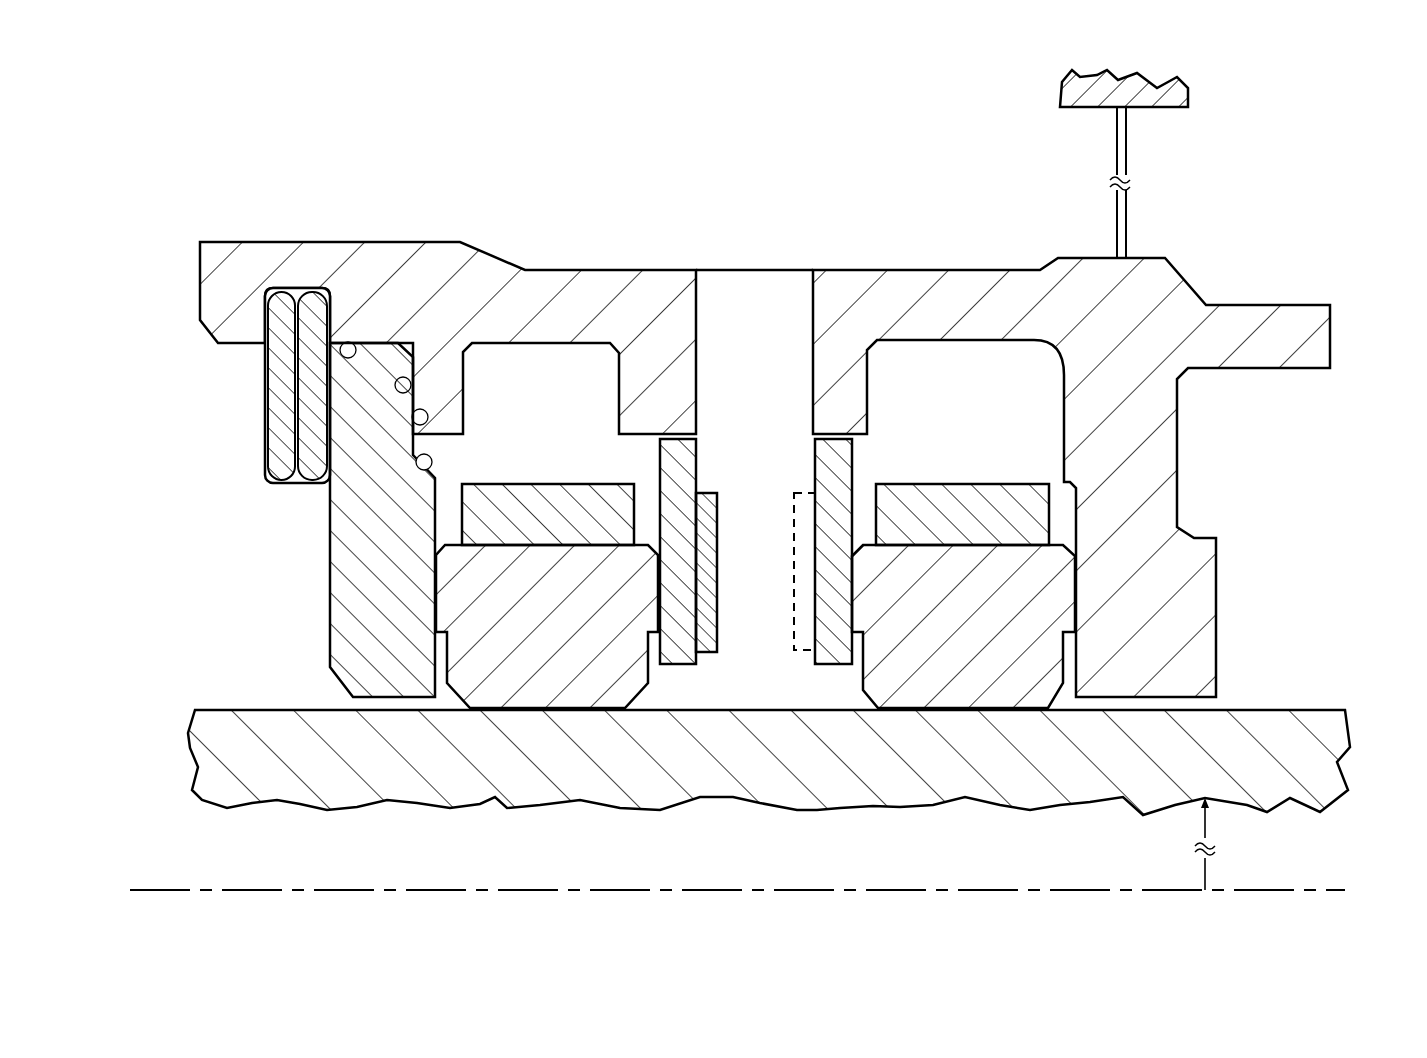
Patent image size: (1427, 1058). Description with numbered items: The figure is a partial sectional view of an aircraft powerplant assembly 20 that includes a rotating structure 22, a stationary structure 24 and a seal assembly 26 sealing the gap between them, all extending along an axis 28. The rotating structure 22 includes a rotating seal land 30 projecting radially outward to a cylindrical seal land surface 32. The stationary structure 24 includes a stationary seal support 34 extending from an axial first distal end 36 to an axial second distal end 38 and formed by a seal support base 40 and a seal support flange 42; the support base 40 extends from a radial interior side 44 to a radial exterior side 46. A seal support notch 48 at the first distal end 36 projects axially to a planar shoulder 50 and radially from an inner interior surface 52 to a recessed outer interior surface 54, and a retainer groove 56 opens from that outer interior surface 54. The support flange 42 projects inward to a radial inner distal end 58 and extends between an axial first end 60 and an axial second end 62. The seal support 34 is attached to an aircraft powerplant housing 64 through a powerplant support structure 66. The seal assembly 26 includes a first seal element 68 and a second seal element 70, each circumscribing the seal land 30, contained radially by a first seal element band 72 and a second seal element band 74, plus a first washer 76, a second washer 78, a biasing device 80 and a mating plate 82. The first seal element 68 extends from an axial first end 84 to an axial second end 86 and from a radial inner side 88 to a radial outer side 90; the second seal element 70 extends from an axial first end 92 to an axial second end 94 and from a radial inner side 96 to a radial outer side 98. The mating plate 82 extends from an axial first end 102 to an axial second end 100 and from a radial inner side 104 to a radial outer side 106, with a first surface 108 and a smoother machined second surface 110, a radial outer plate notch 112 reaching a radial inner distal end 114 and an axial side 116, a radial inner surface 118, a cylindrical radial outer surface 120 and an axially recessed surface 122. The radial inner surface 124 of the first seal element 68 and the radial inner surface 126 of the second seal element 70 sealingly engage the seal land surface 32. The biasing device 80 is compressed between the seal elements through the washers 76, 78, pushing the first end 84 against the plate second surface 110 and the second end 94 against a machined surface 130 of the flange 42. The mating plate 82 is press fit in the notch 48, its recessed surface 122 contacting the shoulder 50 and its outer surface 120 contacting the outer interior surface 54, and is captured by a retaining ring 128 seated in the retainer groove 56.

The powerplant assembly 20 is at (731, 506).
The rotating structure 22 is at (707, 726).
The stationary structure 24 is at (757, 461).
The seal assembly 26 is at (757, 461).
The axis 28 is at (148, 890).
The rotating seal land 30 is at (707, 726).
The seal land surface 32 is at (185, 760).
The stationary seal support 34 is at (757, 461).
The axial first distal end 36 is at (757, 461).
The axial second distal end 38 is at (757, 461).
The seal support base 40 is at (757, 461).
The seal support flange 42 is at (757, 461).
The radial interior side 44 is at (757, 461).
The radial exterior side 46 is at (757, 461).
The seal support notch 48 is at (757, 461).
The shoulder 50 is at (193, 218).
The inner interior surface 52 is at (757, 461).
The outer interior surface 54 is at (313, 483).
The retainer groove 56 is at (247, 382).
The radial inner distal end 58 is at (757, 461).
The axial first end 60 is at (970, 666).
The axial second end 62 is at (757, 461).
The aircraft powerplant housing 64 is at (1188, 92).
The powerplant support structure 66 is at (1126, 143).
The first seal element 68 is at (547, 664).
The second seal element 70 is at (970, 666).
The first seal element band 72 is at (548, 491).
The second seal element band 74 is at (962, 491).
The first washer 76 is at (692, 597).
The second washer 78 is at (847, 597).
The biasing device 80 is at (757, 552).
The mating plate 82 is at (313, 483).
The axial first end 84 is at (313, 483).
The axial second end 86 is at (700, 630).
The radial inner side 88 is at (547, 664).
The radial outer side 90 is at (565, 531).
The axial first end 92 is at (845, 625).
The axial second end 94 is at (757, 461).
The radial inner side 96 is at (970, 666).
The radial outer side 98 is at (978, 531).
The axial second end 100 is at (547, 664).
The axial first end 102 is at (313, 483).
The radial inner side 104 is at (313, 483).
The radial outer side 106 is at (313, 483).
The first surface 108 is at (313, 483).
The second surface 110 is at (547, 664).
The radial outer plate notch 112 is at (548, 491).
The radial inner distal end 114 is at (313, 483).
The axial side 116 is at (247, 382).
The radial inner surface 118 is at (278, 606).
The radial outer surface 120 is at (313, 483).
The axially recessed surface 122 is at (247, 382).
The radial inner surface 124 is at (562, 649).
The radial inner surface 126 is at (970, 666).
The retaining ring 128 is at (298, 290).
The machined surface 130 is at (980, 636).